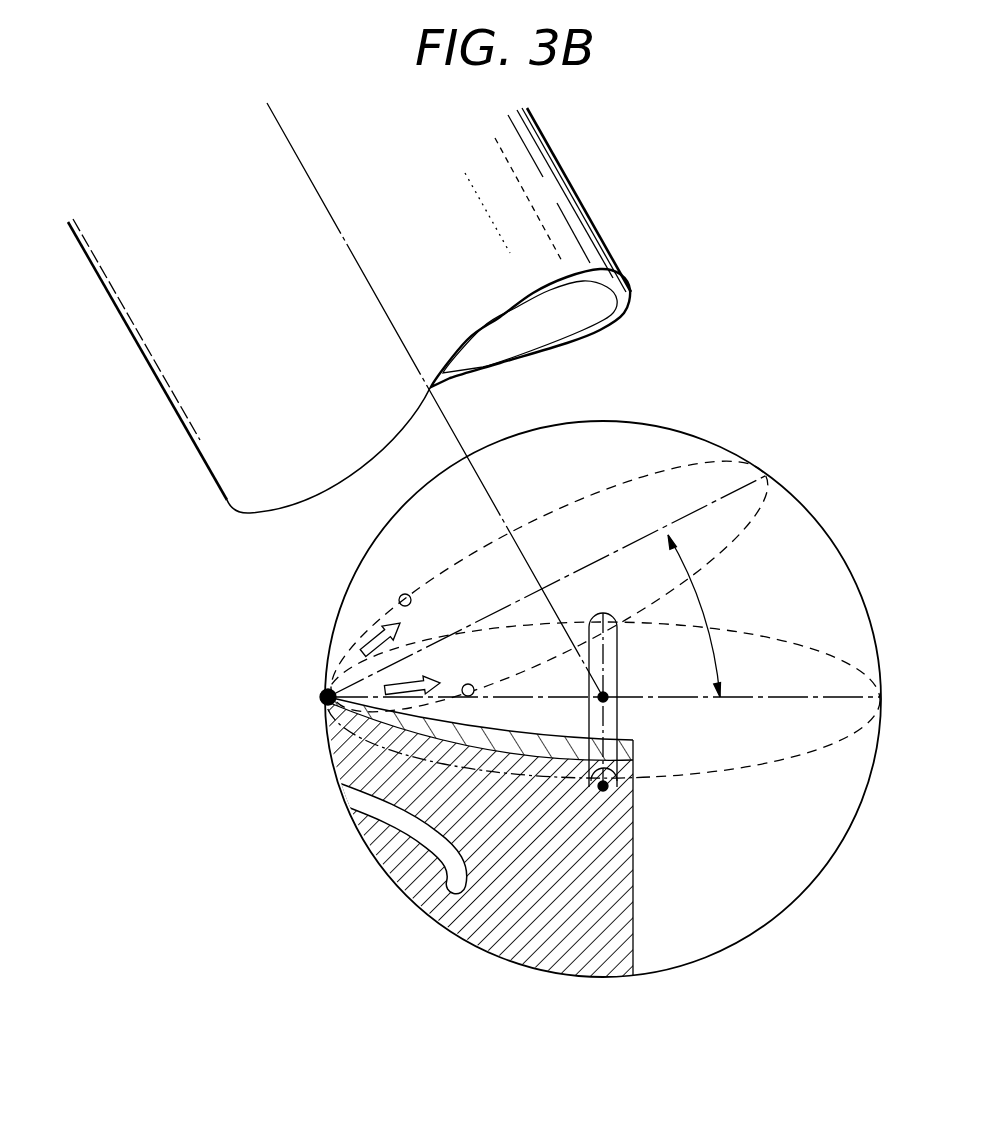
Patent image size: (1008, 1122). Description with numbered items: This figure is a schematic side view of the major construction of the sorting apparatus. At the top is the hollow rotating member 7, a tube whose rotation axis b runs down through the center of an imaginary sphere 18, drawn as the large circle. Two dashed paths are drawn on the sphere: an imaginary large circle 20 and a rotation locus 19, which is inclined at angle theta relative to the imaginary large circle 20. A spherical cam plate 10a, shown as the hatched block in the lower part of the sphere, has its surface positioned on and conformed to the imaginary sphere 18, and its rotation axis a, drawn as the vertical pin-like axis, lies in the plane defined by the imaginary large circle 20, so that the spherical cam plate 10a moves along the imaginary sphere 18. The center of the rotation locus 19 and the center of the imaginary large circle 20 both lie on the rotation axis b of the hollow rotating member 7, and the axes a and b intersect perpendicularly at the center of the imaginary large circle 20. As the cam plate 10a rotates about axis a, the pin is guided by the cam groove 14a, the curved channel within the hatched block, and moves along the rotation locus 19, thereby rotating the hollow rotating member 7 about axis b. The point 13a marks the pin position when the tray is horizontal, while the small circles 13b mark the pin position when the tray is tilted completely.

The hollow rotating member 7 is at (532, 190).
The rotation axis of hollow rotating member b is at (382, 297).
The imaginary sphere 18 is at (805, 497).
The rotation locus 19 is at (661, 472).
The imaginary large circle 20 is at (797, 750).
The spherical cam plate 10a is at (485, 864).
The cam groove 14a is at (396, 848).
The position of pin when tray is horizontal 13a is at (322, 694).
The position of pin when tray is tilted completely 13b is at (470, 684).
The rotation axis of cam plate a is at (603, 787).